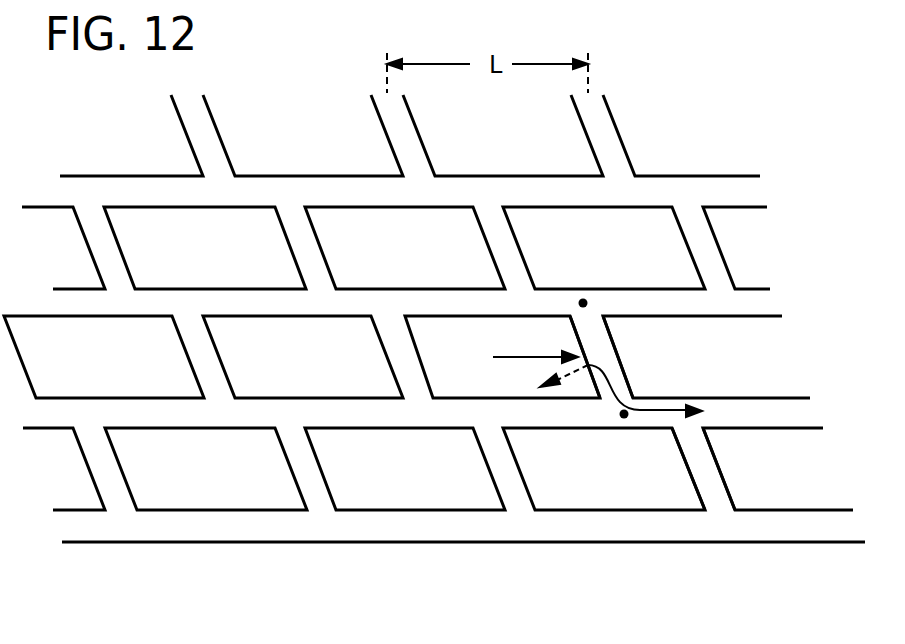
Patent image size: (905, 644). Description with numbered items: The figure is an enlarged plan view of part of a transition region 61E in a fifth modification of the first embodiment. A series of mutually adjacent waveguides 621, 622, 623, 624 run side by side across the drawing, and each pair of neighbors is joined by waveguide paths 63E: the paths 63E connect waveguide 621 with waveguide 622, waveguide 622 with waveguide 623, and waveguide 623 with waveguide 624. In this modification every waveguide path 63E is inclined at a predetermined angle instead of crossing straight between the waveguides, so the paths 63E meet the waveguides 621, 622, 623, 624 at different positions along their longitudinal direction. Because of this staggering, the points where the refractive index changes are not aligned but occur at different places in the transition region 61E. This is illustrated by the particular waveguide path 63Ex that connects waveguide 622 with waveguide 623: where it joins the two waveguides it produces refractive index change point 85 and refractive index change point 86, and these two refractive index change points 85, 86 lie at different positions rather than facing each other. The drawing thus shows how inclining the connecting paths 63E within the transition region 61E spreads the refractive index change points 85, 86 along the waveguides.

The transition region 61E is at (718, 142).
The waveguide 624 is at (766, 199).
The waveguide 623 is at (750, 307).
The waveguide 622 is at (750, 417).
The waveguide 621 is at (757, 533).
The refractive index change point 86 is at (583, 299).
The refractive index change point 85 is at (624, 418).
The waveguide path 63Ex is at (615, 353).
The waveguide path 63E is at (710, 488).